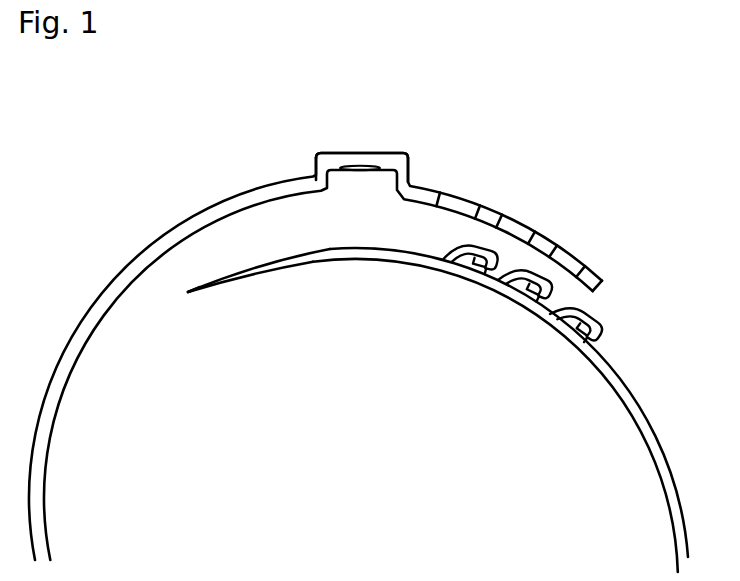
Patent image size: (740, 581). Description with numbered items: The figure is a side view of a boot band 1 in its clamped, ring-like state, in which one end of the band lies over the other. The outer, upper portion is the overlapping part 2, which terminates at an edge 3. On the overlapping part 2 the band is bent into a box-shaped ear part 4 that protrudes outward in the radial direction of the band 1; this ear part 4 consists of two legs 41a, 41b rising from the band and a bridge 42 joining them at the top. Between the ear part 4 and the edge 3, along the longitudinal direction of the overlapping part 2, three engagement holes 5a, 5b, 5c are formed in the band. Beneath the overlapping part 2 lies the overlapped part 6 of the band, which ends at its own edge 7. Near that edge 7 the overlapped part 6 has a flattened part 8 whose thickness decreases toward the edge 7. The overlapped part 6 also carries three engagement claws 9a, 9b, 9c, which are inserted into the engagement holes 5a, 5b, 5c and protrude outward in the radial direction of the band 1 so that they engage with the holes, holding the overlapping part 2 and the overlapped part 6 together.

The band 1 is at (200, 145).
The overlapping part 2 is at (205, 218).
The edge 3 is at (604, 289).
The ear part 4 is at (352, 146).
The leg 41a is at (403, 178).
The leg 41b is at (313, 178).
The bridge 42 is at (378, 158).
The engagement hole 5a is at (473, 207).
The engagement hole 5b is at (527, 227).
The engagement hole 5c is at (573, 260).
The overlapped part 6 is at (423, 260).
The edge 7 is at (188, 292).
The flattened part 8 is at (241, 271).
The engagement claw 9a is at (483, 266).
The engagement claw 9b is at (536, 287).
The engagement claw 9c is at (590, 325).